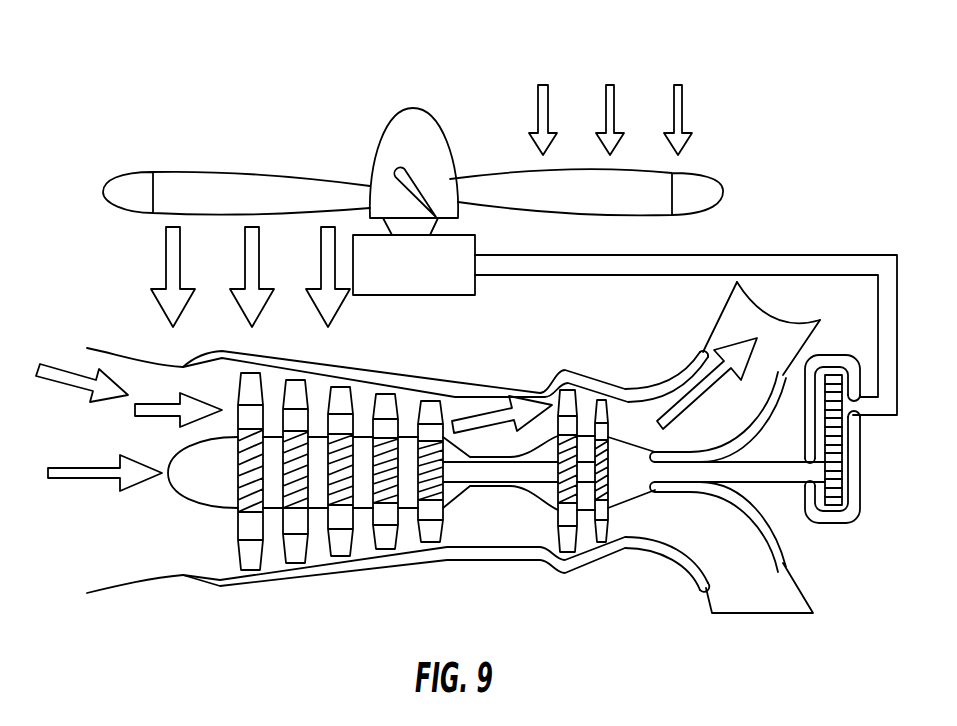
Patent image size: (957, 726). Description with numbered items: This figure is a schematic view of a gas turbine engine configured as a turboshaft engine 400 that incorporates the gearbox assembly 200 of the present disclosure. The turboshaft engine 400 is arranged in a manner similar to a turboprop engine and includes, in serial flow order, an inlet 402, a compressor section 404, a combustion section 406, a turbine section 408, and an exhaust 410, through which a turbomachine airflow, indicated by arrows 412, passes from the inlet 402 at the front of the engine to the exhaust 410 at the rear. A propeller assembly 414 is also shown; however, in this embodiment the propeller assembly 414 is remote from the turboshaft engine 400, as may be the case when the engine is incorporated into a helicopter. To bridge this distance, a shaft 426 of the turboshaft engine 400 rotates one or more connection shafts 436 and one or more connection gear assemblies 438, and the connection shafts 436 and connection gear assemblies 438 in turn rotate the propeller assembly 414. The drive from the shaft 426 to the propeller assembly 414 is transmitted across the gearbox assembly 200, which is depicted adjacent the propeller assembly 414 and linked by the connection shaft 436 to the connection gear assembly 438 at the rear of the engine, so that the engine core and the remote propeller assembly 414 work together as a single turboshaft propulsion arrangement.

The turboshaft engine 400 is at (800, 88).
The propeller assembly 414 is at (342, 134).
The gearbox assembly 200 is at (430, 288).
The connection shaft 436 is at (817, 253).
The turbomachine airflow 412 is at (83, 383).
The inlet 402 is at (183, 536).
The compressor section 404 is at (332, 571).
The combustion section 406 is at (500, 551).
The turbine section 408 is at (597, 557).
The exhaust 410 is at (742, 580).
The shaft 426 is at (757, 475).
The connection gear assembly 438 is at (856, 454).